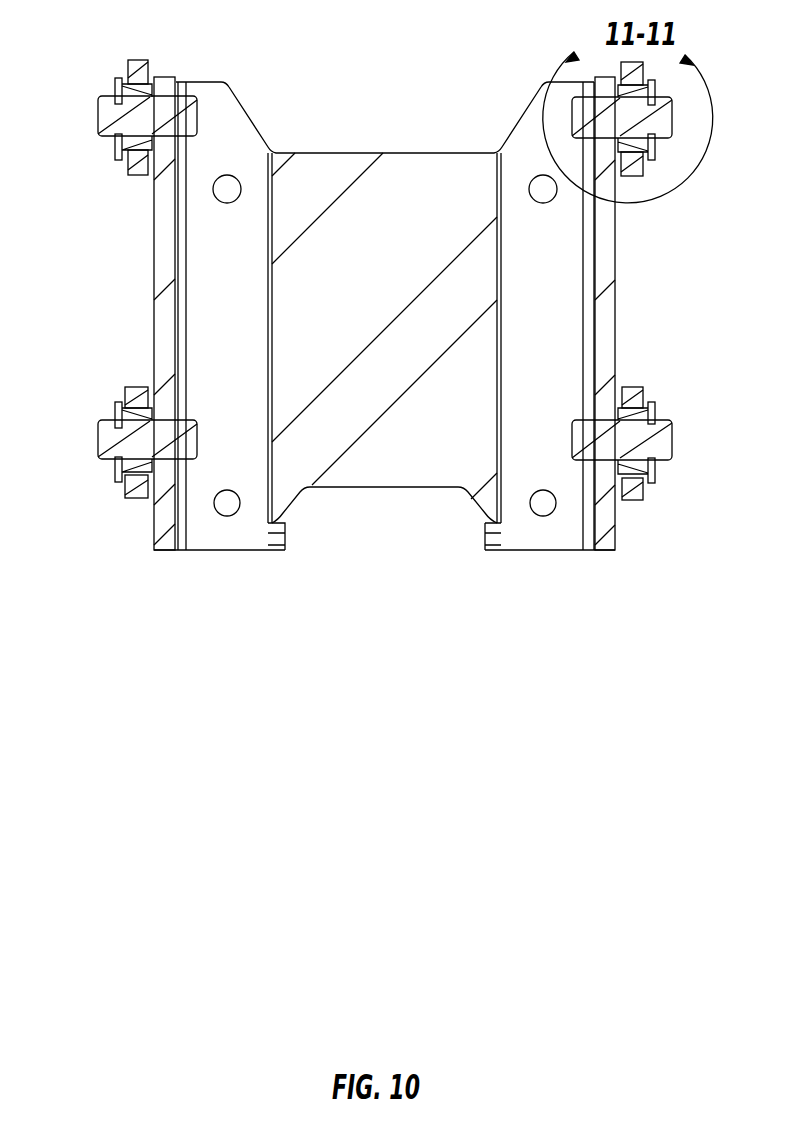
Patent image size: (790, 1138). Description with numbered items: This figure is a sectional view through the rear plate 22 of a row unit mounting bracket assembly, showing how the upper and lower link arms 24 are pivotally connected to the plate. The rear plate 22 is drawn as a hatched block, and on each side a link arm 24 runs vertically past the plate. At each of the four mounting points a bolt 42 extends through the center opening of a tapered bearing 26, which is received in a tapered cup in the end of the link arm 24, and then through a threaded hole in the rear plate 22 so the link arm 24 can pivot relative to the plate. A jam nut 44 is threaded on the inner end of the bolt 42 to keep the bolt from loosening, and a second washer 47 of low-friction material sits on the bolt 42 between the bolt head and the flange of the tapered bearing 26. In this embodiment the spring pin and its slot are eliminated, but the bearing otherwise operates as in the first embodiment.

The rear plate 22 is at (372, 155).
The link arm 24 is at (135, 62).
The tapered bearing 26 is at (120, 80).
The bolt 42 is at (97, 128).
The jam nut 44 is at (188, 100).
The second washer 47 is at (115, 145).